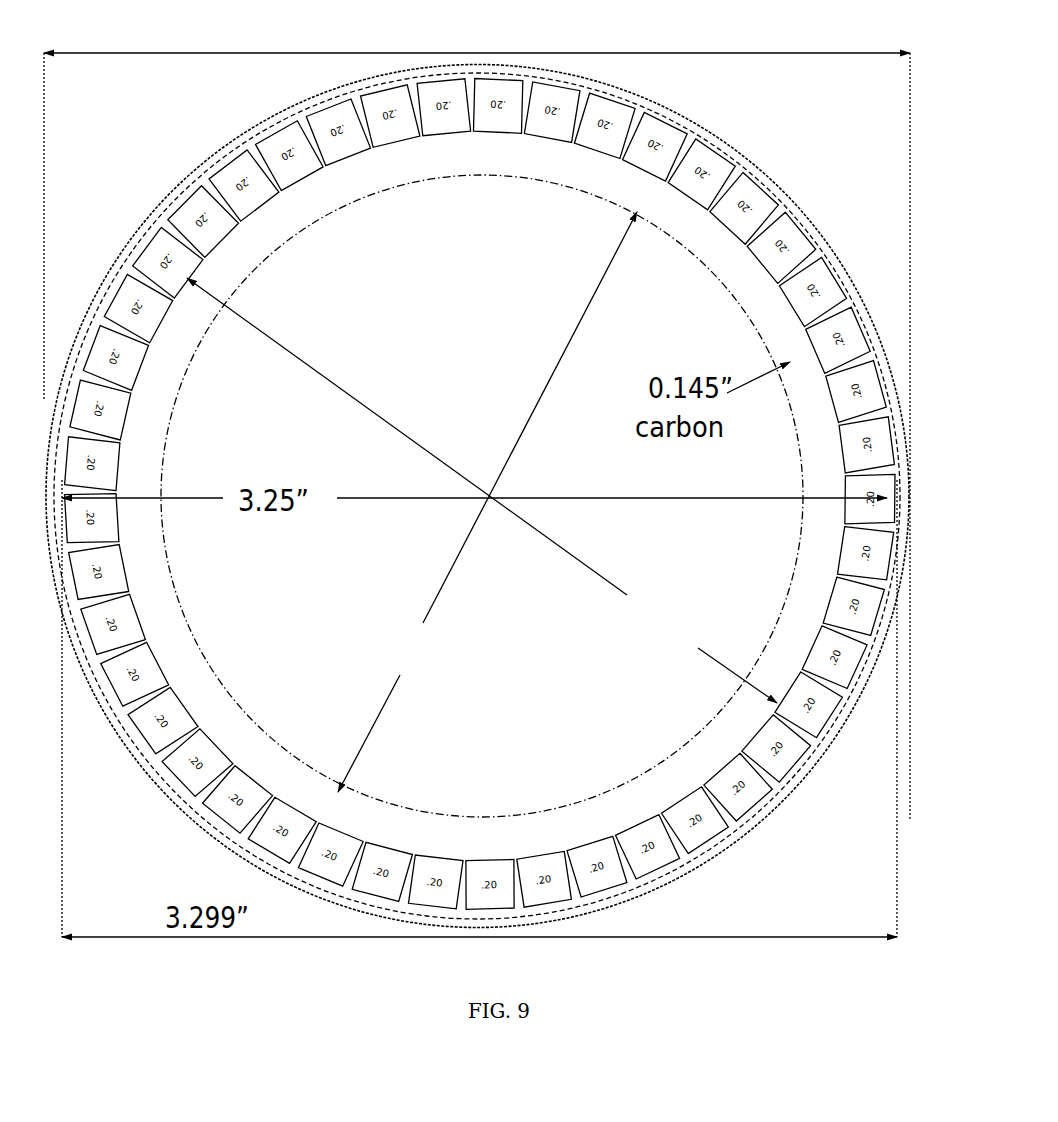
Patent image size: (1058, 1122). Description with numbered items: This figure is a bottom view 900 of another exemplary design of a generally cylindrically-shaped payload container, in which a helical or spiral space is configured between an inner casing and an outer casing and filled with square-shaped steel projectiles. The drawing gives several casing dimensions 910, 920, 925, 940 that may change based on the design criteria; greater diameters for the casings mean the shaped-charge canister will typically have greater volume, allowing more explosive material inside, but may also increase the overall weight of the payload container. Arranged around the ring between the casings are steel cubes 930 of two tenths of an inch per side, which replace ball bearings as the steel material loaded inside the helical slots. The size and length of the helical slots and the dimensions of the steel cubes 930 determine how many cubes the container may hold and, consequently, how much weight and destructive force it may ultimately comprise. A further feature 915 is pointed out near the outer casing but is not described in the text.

The bottom view 900 is at (504, 494).
The casing dimension 910 is at (162, 890).
The carbon layer ring 915 is at (113, 713).
The casing dimension 920 is at (266, 31).
The casing dimension 925 is at (642, 650).
The steel cubes 930 is at (713, 168).
The casing dimension 940 is at (358, 633).